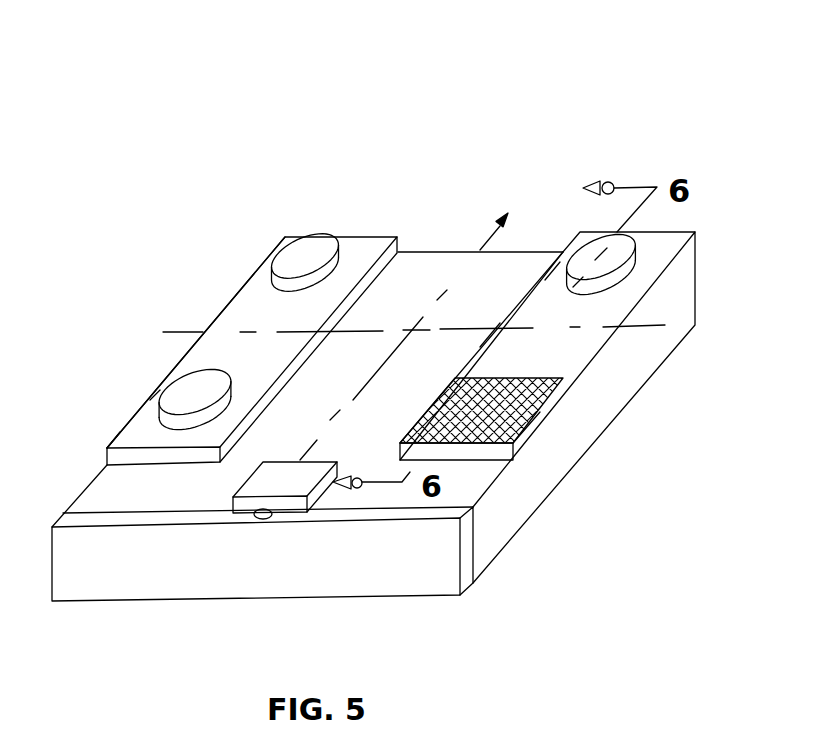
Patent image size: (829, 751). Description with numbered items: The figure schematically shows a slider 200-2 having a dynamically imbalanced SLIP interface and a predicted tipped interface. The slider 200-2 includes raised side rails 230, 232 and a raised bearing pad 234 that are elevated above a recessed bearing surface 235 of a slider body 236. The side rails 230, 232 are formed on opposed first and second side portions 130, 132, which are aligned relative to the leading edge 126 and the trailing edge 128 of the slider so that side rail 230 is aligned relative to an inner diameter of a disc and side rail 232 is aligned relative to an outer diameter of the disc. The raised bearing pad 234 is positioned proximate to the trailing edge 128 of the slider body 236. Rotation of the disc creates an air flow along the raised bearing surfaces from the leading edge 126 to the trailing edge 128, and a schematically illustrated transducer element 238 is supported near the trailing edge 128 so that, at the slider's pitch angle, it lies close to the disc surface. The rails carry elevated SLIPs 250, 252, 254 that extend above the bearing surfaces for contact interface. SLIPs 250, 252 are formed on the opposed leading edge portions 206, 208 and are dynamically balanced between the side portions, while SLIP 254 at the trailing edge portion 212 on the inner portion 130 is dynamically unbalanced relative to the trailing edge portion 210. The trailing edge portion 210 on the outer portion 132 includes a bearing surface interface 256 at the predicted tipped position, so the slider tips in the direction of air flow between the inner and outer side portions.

The slider 200-2 is at (680, 126).
The trailing edge 128 is at (90, 568).
The first side portion 130 is at (240, 314).
The second side portion 132 is at (612, 297).
The leading edge 126 is at (427, 250).
The leading edge portion 208 is at (365, 242).
The trailing edge portion 210 is at (586, 336).
The trailing edge portion 212 is at (213, 333).
The side rail 230 is at (248, 285).
The side rail 232 is at (562, 358).
The raised bearing pad 234 is at (276, 445).
The recessed bearing surface 235 is at (458, 253).
The slider body 236 is at (512, 304).
The transducer element 238 is at (247, 512).
The SLIP 250 is at (612, 248).
The SLIP 252 is at (308, 257).
The SLIP 254 is at (187, 395).
The bearing surface interface 256 is at (510, 408).
The leading edge portion 206 is at (530, 292).